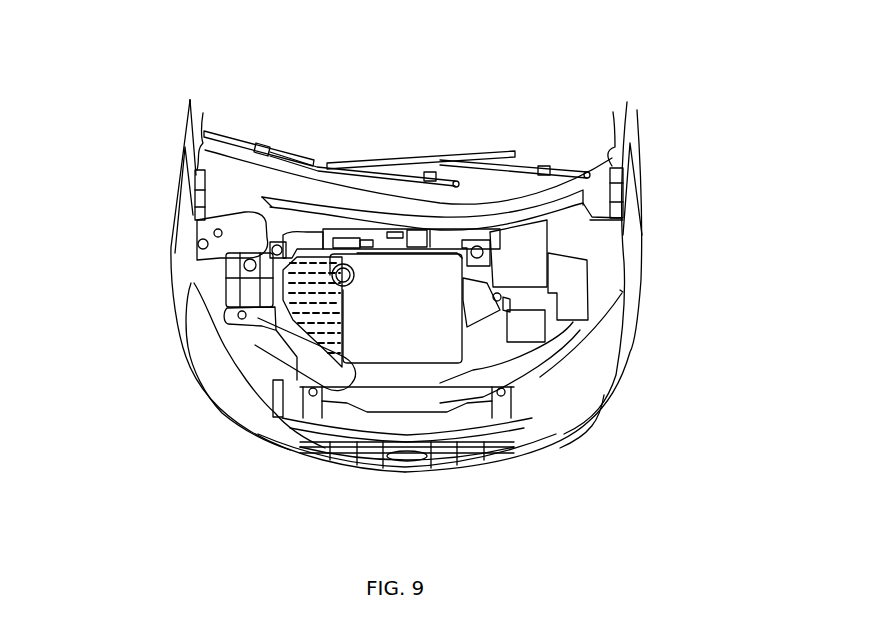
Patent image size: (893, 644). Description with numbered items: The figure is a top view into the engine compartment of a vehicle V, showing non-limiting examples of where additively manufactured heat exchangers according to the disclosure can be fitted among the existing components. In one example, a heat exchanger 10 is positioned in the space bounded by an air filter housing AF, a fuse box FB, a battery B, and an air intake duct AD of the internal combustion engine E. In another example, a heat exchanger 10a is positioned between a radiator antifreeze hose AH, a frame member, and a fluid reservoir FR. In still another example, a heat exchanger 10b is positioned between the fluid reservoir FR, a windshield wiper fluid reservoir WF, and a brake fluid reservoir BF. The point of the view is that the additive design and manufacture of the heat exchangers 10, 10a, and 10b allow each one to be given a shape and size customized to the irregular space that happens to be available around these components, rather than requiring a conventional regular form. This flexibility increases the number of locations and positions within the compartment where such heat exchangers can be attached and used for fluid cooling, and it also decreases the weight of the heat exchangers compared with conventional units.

The windshield wiper fluid reservoir WF is at (190, 100).
The brake fluid reservoir BF is at (282, 240).
The battery B is at (524, 237).
The vehicle V is at (695, 168).
The heat exchanger 10b is at (205, 252).
The heat exchanger 10 is at (553, 284).
The fluid reservoir FR is at (247, 290).
The heat exchanger 10a is at (258, 337).
The radiator antifreeze hose AH is at (318, 350).
The internal combustion engine E is at (414, 355).
The air intake duct AD is at (463, 305).
The air filter housing AF is at (528, 330).
The fuse box FB is at (570, 300).